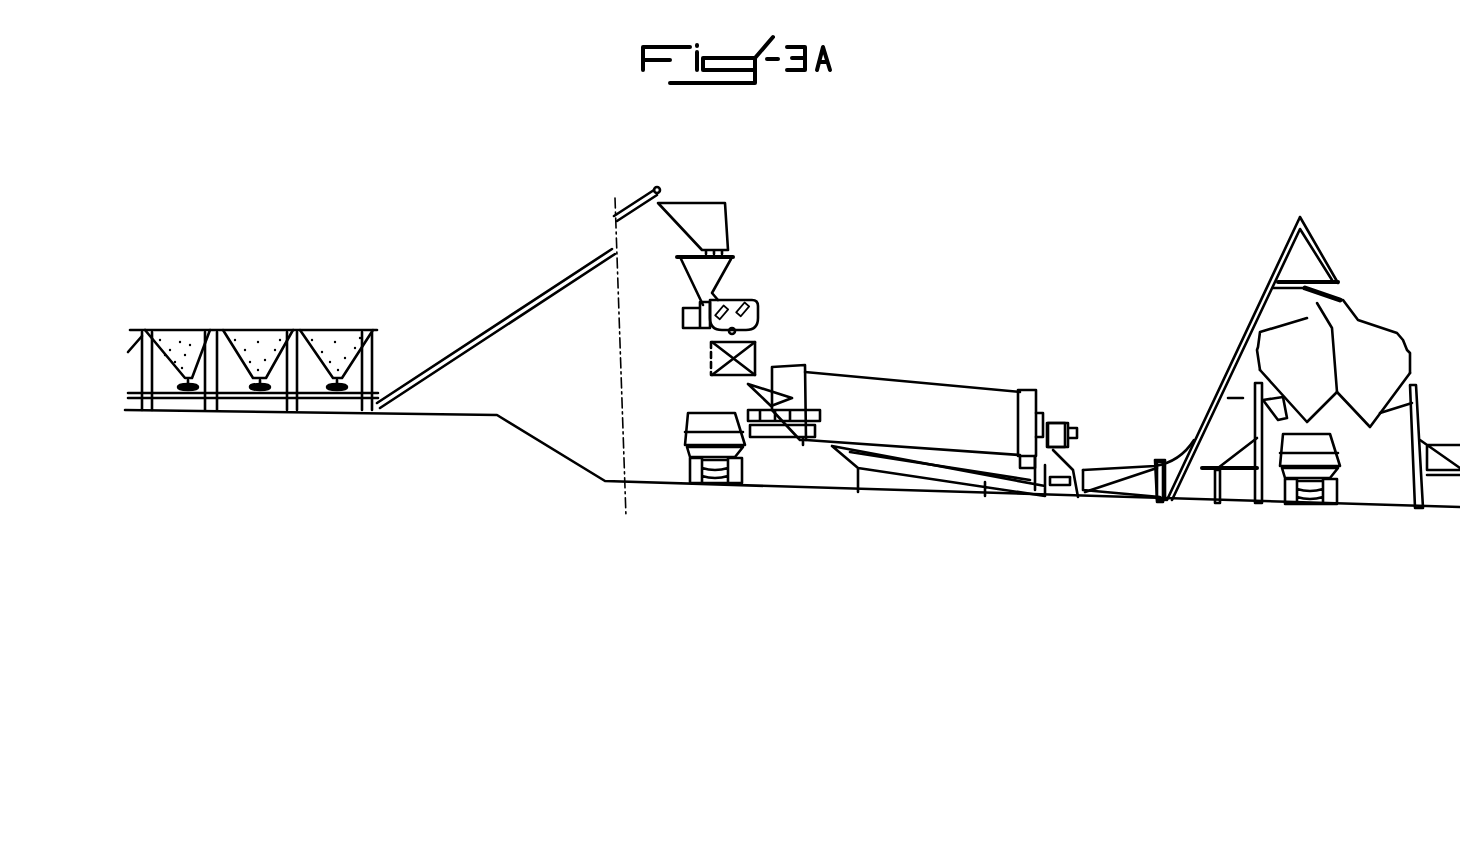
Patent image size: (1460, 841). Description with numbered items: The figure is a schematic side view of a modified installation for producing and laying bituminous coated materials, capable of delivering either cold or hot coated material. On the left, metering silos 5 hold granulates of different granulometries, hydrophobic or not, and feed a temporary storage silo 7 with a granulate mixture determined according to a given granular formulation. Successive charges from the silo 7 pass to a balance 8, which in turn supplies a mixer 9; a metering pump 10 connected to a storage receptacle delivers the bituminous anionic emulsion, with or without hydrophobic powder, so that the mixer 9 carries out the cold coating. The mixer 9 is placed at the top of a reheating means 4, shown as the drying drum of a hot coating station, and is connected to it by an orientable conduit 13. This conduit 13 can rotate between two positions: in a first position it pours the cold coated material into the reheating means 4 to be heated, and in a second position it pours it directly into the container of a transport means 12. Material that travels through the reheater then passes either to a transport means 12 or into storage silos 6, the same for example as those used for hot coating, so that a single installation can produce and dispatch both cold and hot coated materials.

The reheating means 4 is at (898, 384).
The metering silos 5 is at (262, 330).
The storage silos 6 is at (1373, 325).
The temporary storage silo 7 is at (732, 225).
The balance 8 is at (737, 259).
The mixer 9 is at (757, 312).
The metering pump 10 is at (682, 314).
The transport means 12 is at (686, 424).
The orientable conduit 13 is at (758, 357).